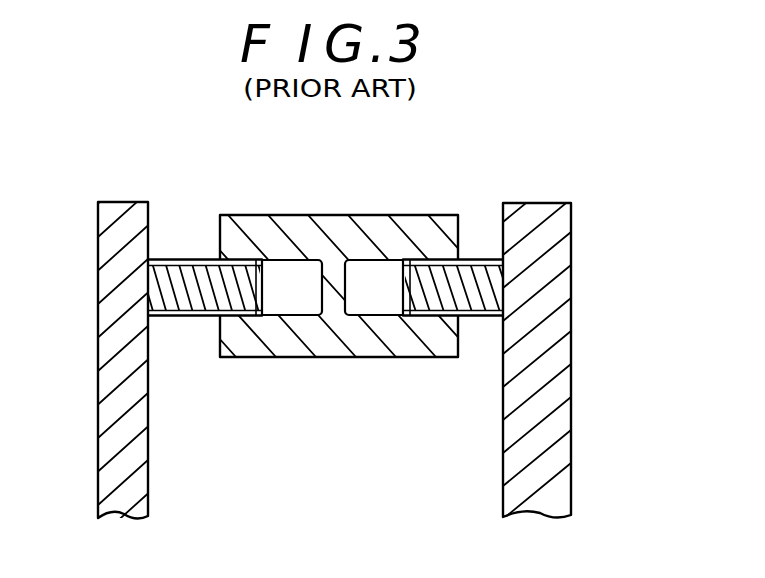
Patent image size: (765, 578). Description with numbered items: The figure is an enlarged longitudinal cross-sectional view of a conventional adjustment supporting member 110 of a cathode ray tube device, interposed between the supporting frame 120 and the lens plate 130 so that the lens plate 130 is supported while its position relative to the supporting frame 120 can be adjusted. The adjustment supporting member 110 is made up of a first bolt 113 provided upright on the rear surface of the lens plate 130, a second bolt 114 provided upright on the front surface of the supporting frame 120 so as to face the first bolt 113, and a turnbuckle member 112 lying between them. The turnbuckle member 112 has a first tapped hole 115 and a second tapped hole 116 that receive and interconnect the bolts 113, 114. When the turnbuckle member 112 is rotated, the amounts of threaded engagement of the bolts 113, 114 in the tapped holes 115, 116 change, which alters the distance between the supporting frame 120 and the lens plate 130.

The adjustment supporting member 110 is at (322, 382).
The turnbuckle member 112 is at (332, 215).
The first bolt 113 is at (190, 320).
The second bolt 114 is at (478, 320).
The first tapped hole 115 is at (280, 262).
The second tapped hole 116 is at (374, 268).
The supporting frame 120 is at (540, 203).
The lens plate 130 is at (125, 205).